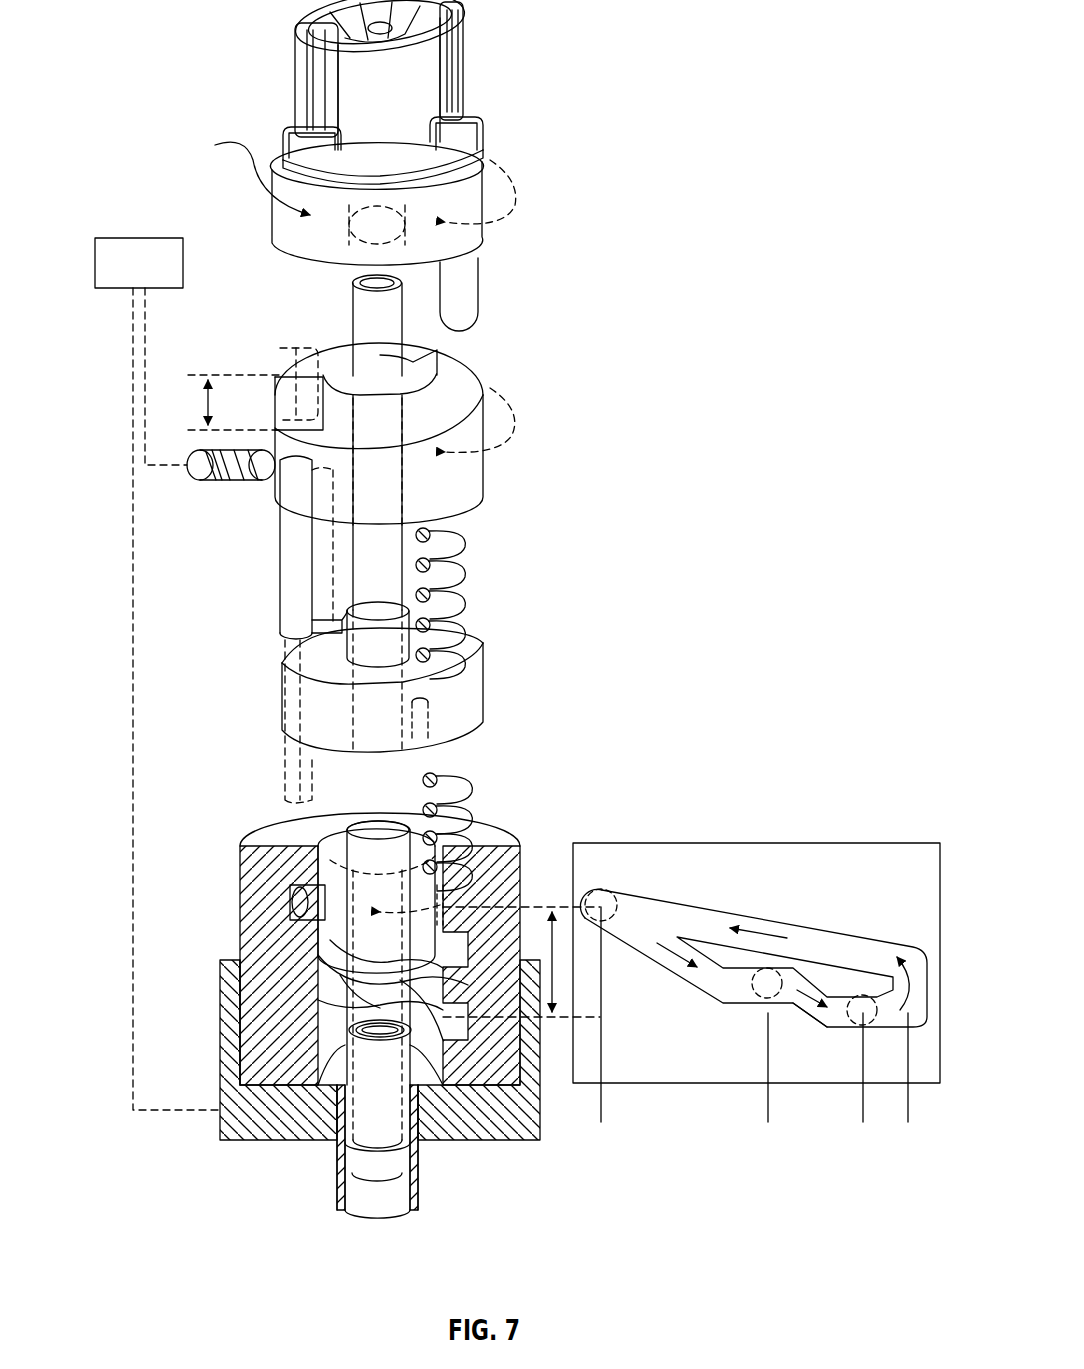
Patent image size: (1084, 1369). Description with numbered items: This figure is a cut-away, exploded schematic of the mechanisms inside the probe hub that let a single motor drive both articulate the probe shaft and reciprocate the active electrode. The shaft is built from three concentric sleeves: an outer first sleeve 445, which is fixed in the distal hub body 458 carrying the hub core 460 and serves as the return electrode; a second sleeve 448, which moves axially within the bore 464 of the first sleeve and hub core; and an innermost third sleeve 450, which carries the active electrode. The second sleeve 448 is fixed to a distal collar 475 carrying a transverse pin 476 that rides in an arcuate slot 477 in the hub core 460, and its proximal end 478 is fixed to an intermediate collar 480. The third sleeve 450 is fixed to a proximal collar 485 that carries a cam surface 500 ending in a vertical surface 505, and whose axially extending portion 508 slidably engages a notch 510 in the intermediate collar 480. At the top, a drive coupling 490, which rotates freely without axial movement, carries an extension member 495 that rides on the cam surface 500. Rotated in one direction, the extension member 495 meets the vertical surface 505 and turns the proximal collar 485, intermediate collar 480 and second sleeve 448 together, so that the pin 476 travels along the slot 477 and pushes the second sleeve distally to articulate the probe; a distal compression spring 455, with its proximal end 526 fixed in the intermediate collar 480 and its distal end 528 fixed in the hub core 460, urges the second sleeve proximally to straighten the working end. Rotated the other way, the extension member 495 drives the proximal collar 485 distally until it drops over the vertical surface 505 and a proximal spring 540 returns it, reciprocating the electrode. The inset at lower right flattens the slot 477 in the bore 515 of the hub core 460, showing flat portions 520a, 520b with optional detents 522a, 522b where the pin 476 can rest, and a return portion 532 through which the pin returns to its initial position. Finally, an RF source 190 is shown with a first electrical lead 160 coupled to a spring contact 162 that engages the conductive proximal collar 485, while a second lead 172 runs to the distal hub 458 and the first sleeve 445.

The RF source 190 is at (140, 238).
The first electrical lead 160 is at (147, 335).
The second lead 172 is at (131, 440).
The spring contact 162 is at (262, 480).
The vertical surface 505 is at (275, 380).
The axially extending portion 508 is at (278, 560).
The notch 510 is at (310, 652).
The third sleeve 450 is at (360, 322).
The drive coupling 490 is at (468, 230).
The extension member 495 is at (465, 295).
The cam surface 500 is at (414, 430).
The proximal collar 485 is at (478, 488).
The proximal spring 540 is at (452, 550).
The proximal end 478 is at (442, 625).
The intermediate collar 480 is at (472, 722).
The proximal end 526 is at (428, 722).
The distal compression spring 455 is at (468, 792).
The second sleeve 448 is at (330, 800).
The distal end 528 is at (372, 822).
The transverse pin 476 is at (300, 900).
The hub core 460 is at (252, 915).
The distal collar 475 is at (252, 972).
The arcuate slot 477 is at (332, 1010).
The distal hub body 458 is at (232, 1125).
The bore 515 is at (322, 1088).
The bore 464 is at (395, 1190).
The first sleeve 445 is at (424, 1195).
The return portion 532 is at (457, 860).
The detent 522a is at (775, 955).
The detent 522b is at (850, 975).
The flat portion 520a is at (750, 1005).
The flat portion 520b is at (858, 1030).